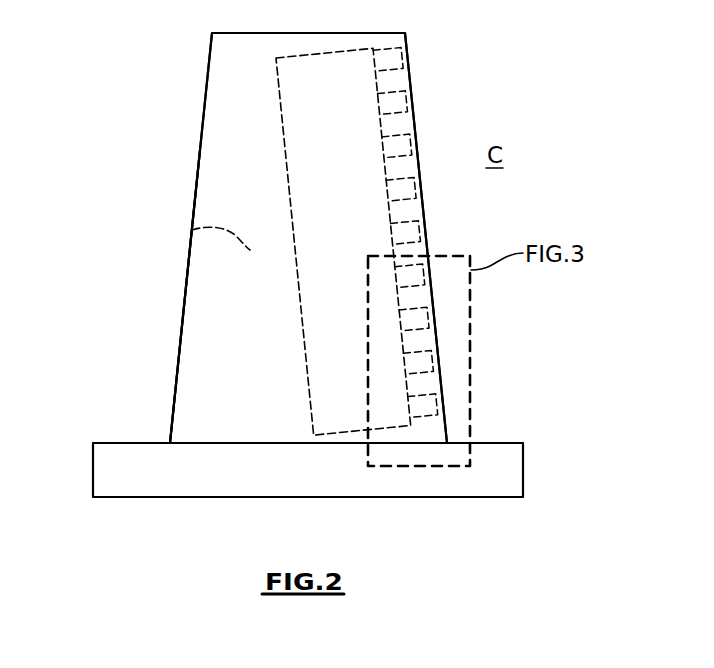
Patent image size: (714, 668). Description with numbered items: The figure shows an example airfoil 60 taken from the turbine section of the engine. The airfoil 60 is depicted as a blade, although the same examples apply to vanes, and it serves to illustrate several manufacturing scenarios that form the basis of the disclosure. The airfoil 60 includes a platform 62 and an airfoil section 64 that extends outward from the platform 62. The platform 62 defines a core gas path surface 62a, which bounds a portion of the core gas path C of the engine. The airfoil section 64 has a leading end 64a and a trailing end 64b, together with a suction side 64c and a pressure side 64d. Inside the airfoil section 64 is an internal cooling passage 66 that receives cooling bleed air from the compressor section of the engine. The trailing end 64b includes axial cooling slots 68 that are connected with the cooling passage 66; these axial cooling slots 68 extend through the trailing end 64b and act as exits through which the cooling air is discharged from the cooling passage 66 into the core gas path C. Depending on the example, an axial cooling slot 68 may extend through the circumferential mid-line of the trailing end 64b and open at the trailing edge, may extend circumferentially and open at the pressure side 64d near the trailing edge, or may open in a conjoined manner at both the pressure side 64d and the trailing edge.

The airfoil 60 is at (74, 346).
The platform 62 is at (505, 473).
The core gas path surface 62a is at (498, 443).
The airfoil section 64 is at (224, 110).
The leading end 64a is at (193, 205).
The trailing end 64b is at (410, 80).
The suction side 64c is at (224, 295).
The pressure side 64d is at (190, 230).
The internal cooling passage 66 is at (278, 78).
The axial cooling slots 68 is at (424, 310).